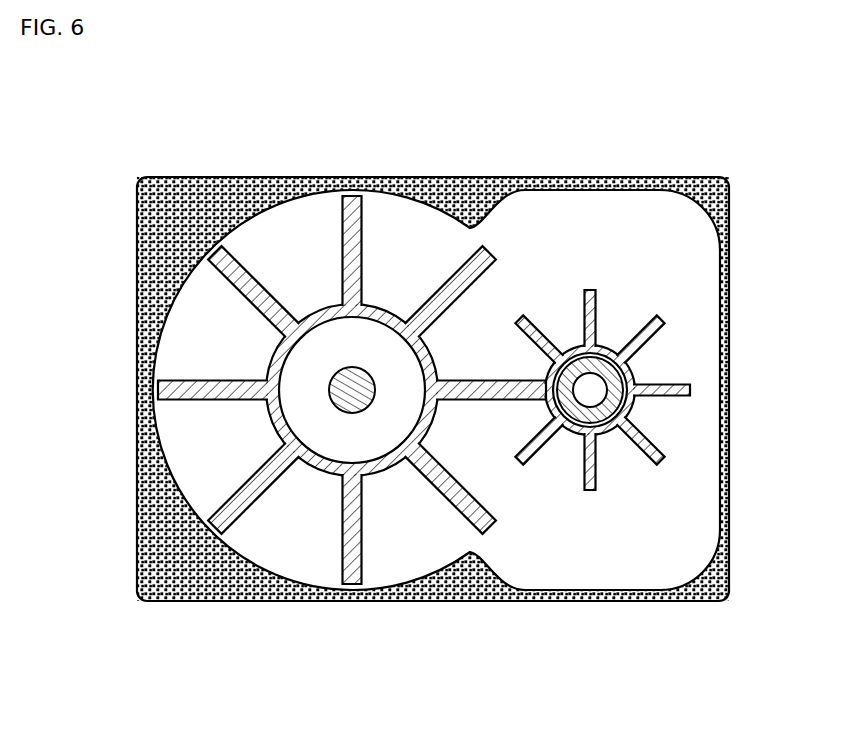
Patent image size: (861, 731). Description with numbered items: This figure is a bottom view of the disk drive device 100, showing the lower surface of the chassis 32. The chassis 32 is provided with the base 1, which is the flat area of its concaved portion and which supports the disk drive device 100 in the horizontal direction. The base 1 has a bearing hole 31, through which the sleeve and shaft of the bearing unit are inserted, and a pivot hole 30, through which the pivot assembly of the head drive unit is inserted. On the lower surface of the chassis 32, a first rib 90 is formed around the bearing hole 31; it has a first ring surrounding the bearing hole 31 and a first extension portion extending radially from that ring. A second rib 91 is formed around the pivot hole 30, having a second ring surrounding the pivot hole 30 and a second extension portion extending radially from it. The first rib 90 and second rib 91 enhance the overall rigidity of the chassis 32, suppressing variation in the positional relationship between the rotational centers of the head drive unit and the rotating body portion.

The disk drive device 100 is at (480, 682).
The chassis 32 is at (463, 335).
The base 1 is at (707, 267).
The first rib 90 is at (302, 350).
The bearing hole 31 is at (349, 377).
The second rib 91 is at (677, 385).
The pivot hole 30 is at (594, 393).